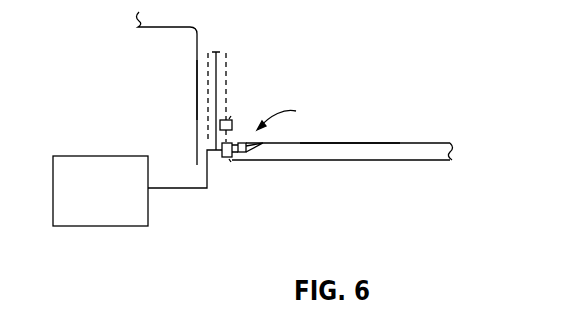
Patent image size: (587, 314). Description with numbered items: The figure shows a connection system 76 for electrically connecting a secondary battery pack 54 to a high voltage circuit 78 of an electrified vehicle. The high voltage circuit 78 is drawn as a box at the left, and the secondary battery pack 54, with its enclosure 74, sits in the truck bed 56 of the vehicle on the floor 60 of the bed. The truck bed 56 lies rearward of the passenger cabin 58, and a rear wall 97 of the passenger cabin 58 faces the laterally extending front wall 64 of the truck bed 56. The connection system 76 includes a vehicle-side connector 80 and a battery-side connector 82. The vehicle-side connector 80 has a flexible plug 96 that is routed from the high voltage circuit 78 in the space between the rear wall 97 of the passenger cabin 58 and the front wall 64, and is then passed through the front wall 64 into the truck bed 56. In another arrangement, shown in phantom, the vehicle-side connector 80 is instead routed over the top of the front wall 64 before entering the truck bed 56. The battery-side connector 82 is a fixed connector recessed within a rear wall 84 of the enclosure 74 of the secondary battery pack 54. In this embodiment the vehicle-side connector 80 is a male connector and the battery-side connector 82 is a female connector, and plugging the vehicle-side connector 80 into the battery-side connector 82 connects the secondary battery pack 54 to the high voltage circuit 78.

The secondary battery pack 54 is at (421, 149).
The truck bed 56 is at (343, 105).
The passenger cabin 58 is at (135, 120).
The floor 60 is at (456, 163).
The front wall 64 is at (217, 70).
The enclosure 74 is at (383, 143).
The connection system 76 is at (289, 114).
The high voltage circuit 78 is at (101, 155).
The vehicle-side connector 80 is at (228, 114).
The battery-side connector 82 is at (264, 143).
The rear wall 84 is at (246, 156).
The flexible plug 96 is at (234, 120).
The rear wall 97 is at (197, 97).